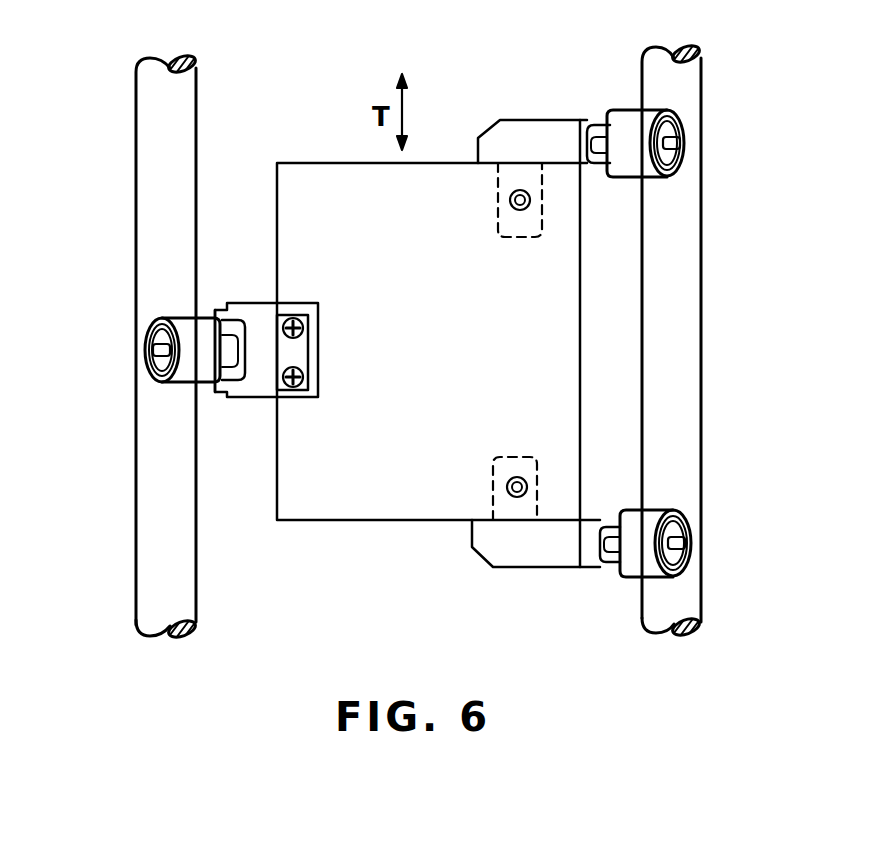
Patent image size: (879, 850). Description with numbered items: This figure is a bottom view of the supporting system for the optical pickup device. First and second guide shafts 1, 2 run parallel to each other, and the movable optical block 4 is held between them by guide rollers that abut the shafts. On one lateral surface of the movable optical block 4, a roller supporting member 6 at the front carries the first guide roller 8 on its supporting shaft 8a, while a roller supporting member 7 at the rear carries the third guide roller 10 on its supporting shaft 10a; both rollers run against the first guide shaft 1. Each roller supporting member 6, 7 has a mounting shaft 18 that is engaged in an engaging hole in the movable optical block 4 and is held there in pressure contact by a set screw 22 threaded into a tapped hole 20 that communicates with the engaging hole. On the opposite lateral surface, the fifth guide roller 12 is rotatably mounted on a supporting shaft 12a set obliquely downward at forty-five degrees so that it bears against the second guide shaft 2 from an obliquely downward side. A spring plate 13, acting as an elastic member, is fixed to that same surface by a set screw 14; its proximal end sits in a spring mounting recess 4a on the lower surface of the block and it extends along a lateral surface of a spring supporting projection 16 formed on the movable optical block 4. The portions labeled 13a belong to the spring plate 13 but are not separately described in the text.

The first guide shaft 1 is at (683, 92).
The second guide shaft 2 is at (136, 183).
The movable optical block 4 is at (382, 522).
The spring mounting recess 4a is at (323, 385).
The roller supporting member 6 is at (522, 140).
The roller supporting member 7 is at (507, 560).
The first guide roller 8 is at (623, 118).
The supporting shaft 8a is at (680, 143).
The third guide roller 10 is at (640, 517).
The supporting shaft 10a is at (685, 543).
The fifth guide roller 12 is at (187, 383).
The supporting shaft 12a is at (153, 350).
The spring plate 13 is at (244, 302).
The bracket flange 13a is at (216, 309).
The set screw 14 is at (284, 321).
The spring supporting projection 16 is at (251, 398).
The mounting shaft 18 is at (500, 200).
The tapped hole 20 is at (517, 194).
The set screw 22 is at (526, 196).